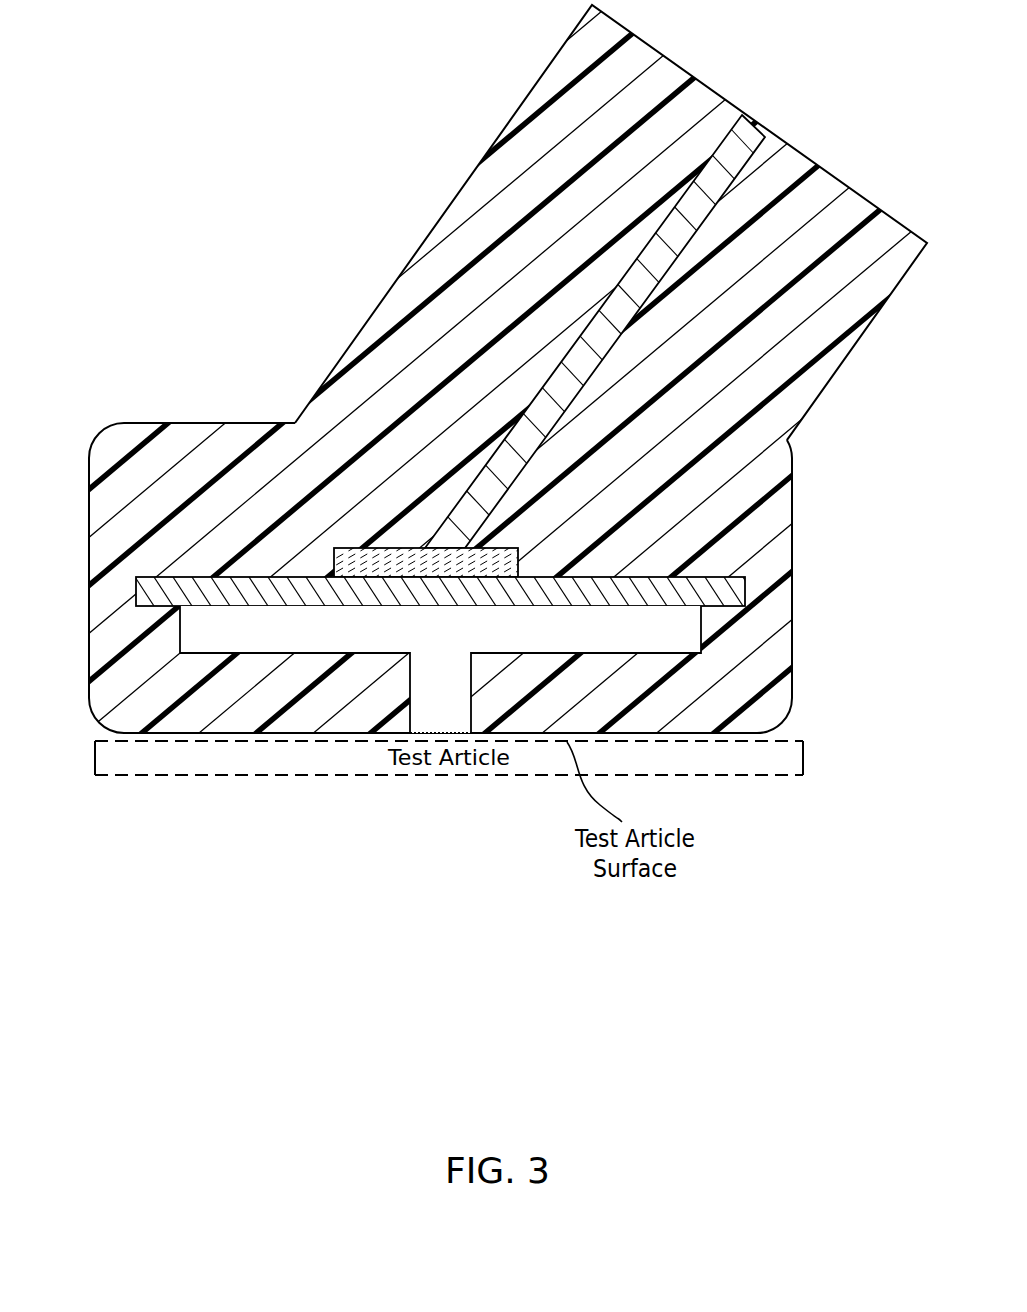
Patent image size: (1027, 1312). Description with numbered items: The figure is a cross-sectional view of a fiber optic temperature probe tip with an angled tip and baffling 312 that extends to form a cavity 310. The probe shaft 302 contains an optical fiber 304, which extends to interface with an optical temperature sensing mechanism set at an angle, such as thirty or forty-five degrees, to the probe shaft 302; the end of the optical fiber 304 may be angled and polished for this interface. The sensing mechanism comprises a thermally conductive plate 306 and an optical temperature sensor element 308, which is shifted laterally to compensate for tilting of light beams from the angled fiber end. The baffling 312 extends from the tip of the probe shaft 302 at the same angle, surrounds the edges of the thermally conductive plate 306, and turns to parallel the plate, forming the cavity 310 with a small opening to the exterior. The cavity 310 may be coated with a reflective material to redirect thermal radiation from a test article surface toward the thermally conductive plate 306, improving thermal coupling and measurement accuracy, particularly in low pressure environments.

The probe shaft 302 is at (427, 237).
The optical fiber 304 is at (760, 121).
The thermally conductive plate 306 is at (750, 597).
The optical temperature sensor element 308 is at (334, 548).
The cavity 310 is at (667, 645).
The baffling 312 is at (150, 697).